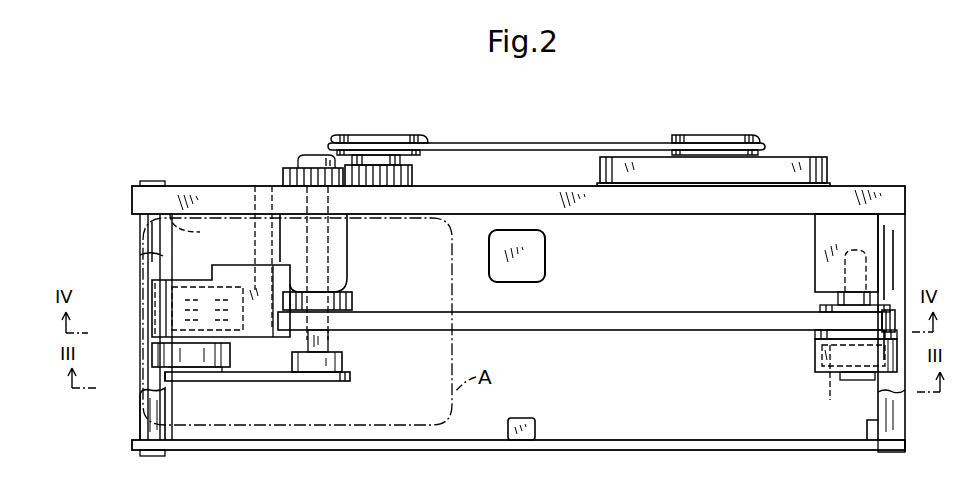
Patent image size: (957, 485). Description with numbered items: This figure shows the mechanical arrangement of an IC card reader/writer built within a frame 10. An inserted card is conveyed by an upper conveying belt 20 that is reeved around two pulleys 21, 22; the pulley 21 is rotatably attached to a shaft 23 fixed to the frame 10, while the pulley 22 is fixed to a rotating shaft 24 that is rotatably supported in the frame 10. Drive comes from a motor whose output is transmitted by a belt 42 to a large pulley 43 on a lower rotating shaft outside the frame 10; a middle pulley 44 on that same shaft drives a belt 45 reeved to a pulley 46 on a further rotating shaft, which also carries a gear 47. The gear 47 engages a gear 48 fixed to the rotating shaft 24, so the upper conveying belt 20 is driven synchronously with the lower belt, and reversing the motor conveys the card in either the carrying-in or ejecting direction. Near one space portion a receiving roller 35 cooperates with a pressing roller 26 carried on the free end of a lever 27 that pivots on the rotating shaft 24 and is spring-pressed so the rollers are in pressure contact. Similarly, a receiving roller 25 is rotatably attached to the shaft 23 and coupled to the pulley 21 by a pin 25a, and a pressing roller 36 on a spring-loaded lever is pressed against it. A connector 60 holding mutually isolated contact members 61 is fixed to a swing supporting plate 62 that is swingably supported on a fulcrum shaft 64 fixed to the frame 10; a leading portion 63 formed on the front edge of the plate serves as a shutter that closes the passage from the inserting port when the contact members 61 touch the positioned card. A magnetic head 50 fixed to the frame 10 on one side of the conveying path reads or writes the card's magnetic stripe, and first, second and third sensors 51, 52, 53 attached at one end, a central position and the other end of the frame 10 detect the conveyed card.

The frame 10 is at (878, 188).
The upper conveying belt 20 is at (645, 330).
The pulley 21 is at (885, 305).
The pulley 22 is at (352, 302).
The shaft 23 is at (845, 270).
The rotating shaft 24 is at (328, 268).
The receiving roller 25 is at (815, 360).
The pin 25a is at (820, 338).
The pressing roller 26 is at (208, 370).
The lever 27 is at (287, 378).
The receiving roller 35 is at (232, 360).
The pressing roller 36 is at (828, 381).
The belt 42 is at (795, 157).
The large pulley 43 is at (828, 184).
The middle pulley 44 is at (727, 135).
The belt 45 is at (548, 143).
The pulley 46 is at (392, 135).
The gear 47 is at (412, 178).
The gear 48 is at (287, 170).
The magnetic head 50 is at (546, 260).
The first sensor 51 is at (178, 437).
The second sensor 52 is at (508, 428).
The third sensor 53 is at (868, 425).
The connector 60 is at (235, 285).
The contact members 61 is at (196, 292).
The swing supporting plate 62 is at (168, 285).
The leading portion 63 is at (152, 290).
The fulcrum shaft 64 is at (255, 235).